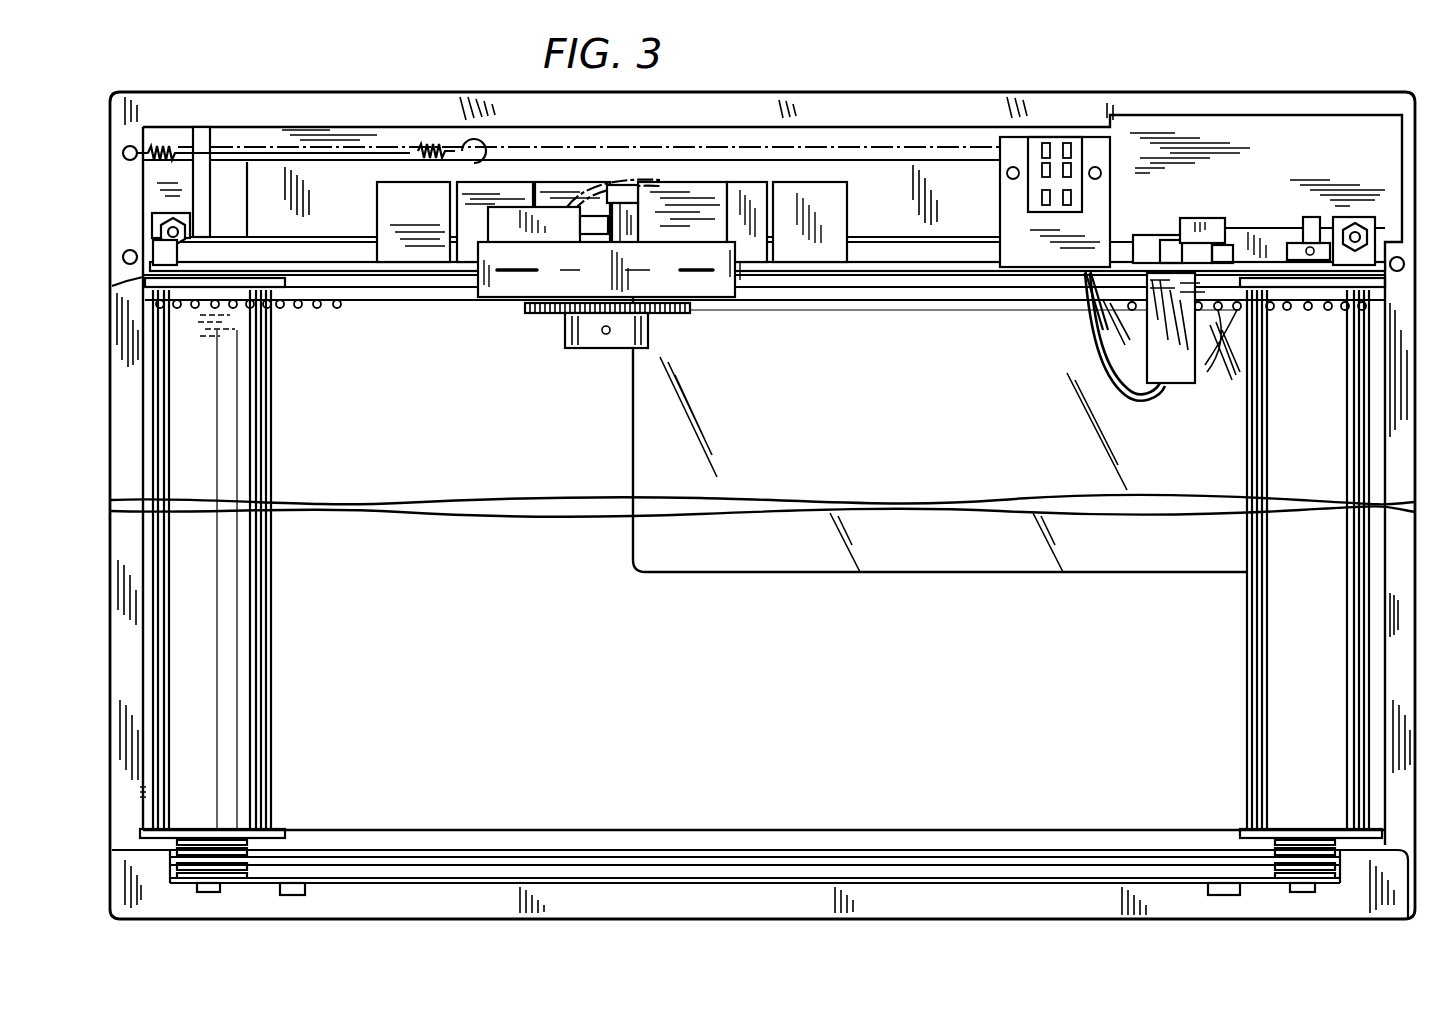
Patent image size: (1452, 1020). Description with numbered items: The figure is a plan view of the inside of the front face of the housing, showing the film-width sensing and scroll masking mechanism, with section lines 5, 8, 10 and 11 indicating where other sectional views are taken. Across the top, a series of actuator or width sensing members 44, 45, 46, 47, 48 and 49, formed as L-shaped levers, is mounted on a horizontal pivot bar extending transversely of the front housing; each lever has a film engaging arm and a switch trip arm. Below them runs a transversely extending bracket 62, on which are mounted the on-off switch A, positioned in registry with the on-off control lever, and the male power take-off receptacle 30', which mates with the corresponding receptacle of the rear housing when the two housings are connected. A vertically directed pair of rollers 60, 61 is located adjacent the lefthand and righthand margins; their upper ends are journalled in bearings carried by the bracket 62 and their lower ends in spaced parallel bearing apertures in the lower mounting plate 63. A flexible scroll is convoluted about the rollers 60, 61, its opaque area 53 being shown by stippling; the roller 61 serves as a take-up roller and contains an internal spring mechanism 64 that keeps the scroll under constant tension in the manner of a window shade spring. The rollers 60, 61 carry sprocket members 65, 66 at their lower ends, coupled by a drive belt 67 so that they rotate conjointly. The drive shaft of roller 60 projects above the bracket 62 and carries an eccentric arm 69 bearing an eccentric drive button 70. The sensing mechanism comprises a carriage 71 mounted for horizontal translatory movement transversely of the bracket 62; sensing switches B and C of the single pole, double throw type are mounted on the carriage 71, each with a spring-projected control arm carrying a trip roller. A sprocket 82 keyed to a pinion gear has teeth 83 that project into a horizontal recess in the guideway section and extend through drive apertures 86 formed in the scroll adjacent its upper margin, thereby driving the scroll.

The actuator or width sensing member 44 is at (403, 185).
The actuator or width sensing member 45 is at (493, 192).
The actuator or width sensing member 46 is at (550, 185).
The actuator or width sensing member 47 is at (682, 190).
The actuator or width sensing member 48 is at (755, 190).
The actuator or width sensing member 49 is at (808, 190).
The male power take-off receptacle 30' is at (1055, 158).
The eccentric drive button 70 is at (1332, 228).
The eccentric arm 69 is at (1292, 245).
The on-off switch A is at (1176, 250).
The sensing switch B is at (632, 195).
The sensing switch C is at (580, 222).
The transversely extending bracket 62 is at (290, 266).
The roller 61 is at (112, 286).
The internal spring mechanism 64 is at (150, 318).
The sprocket 82 is at (548, 315).
The carriage 71 is at (693, 286).
The teeth 83 is at (697, 312).
The drive apertures 86 is at (1162, 341).
The roller 60 is at (1328, 558).
The sprocket member 65 is at (1340, 875).
The sprocket member 66 is at (165, 878).
The drive belt 67 is at (615, 865).
The lower mounting plate 63 is at (737, 878).
The opaque area 53 is at (876, 650).
The section line 5- 5 is at (108, 168).
The section line 8- 8 is at (960, 122).
The section line 10- 10 is at (333, 318).
The section line 11- 11 is at (290, 744).